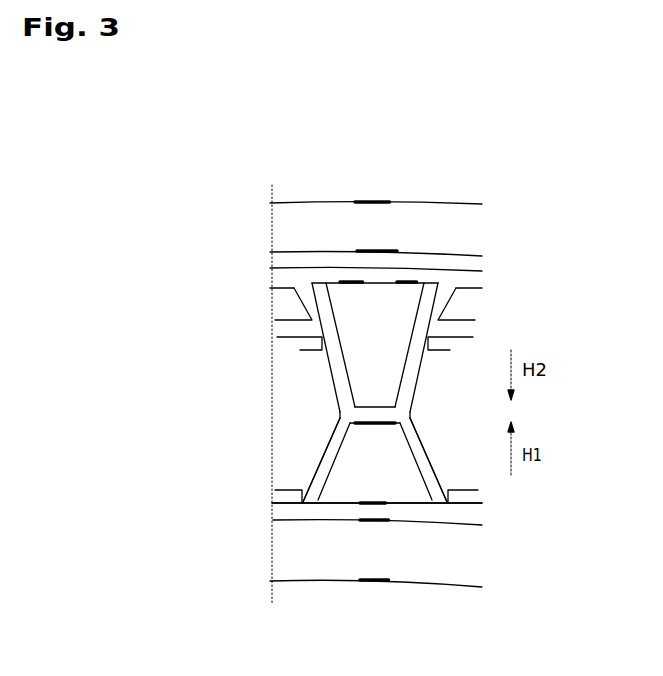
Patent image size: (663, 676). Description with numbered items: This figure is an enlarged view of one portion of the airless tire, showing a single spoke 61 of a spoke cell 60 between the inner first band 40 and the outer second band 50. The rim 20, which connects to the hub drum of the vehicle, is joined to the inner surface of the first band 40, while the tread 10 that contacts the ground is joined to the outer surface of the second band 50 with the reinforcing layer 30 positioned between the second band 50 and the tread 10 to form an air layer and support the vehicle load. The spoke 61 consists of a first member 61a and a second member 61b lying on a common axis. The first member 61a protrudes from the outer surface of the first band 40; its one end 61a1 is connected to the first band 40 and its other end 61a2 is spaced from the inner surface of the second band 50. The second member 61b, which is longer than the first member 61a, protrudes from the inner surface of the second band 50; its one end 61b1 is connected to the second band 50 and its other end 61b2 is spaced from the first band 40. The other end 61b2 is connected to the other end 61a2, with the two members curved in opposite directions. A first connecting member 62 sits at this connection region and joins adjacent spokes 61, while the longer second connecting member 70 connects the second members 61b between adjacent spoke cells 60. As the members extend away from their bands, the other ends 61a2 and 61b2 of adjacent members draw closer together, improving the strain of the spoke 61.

The tread 10 is at (343, 212).
The rim 20 is at (273, 555).
The reinforcing layer 30 is at (478, 266).
The first band 40 is at (427, 512).
The second band 50 is at (283, 282).
The second connecting member 70 is at (290, 321).
The spoke cell 60 is at (372, 325).
The spoke 61 is at (190, 382).
The first member 61a is at (325, 450).
The one end of first member 61a1 is at (300, 493).
The other end of first member 61a2 is at (356, 428).
The second member 61b is at (342, 362).
The one end of second member 61b1 is at (299, 307).
The other end of second member 61b2 is at (353, 391).
The first connecting member 62 is at (372, 424).